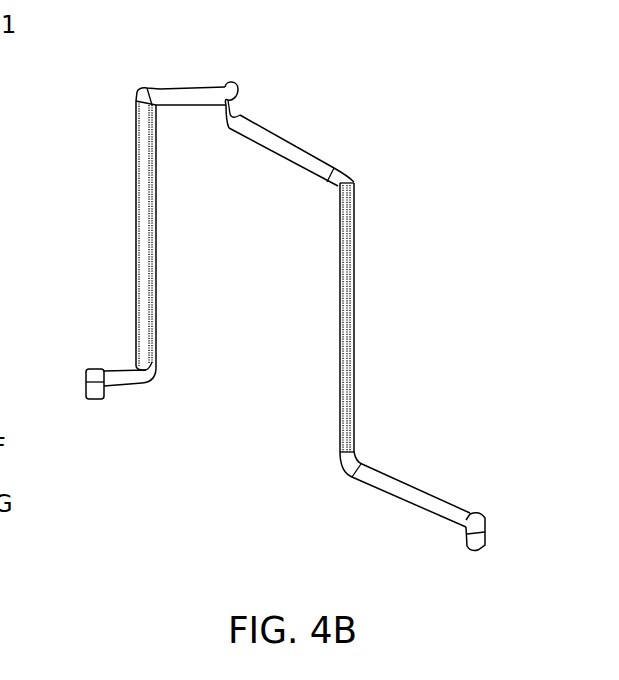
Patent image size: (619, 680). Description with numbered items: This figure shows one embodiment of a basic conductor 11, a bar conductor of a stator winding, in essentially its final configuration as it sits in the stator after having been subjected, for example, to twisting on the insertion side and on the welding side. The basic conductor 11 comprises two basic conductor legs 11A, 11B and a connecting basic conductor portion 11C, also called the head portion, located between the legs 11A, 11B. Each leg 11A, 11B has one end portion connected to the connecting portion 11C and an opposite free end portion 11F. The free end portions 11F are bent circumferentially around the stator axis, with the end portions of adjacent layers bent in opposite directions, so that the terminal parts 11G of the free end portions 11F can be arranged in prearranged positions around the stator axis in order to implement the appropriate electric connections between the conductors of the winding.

The basic conductor 11 is at (376, 124).
The basic conductor leg 11A is at (355, 307).
The basic conductor leg 11B is at (135, 237).
The connecting basic conductor portion 11C is at (191, 88).
The free end portion 11F is at (88, 373).
The terminal part 11G is at (88, 390).